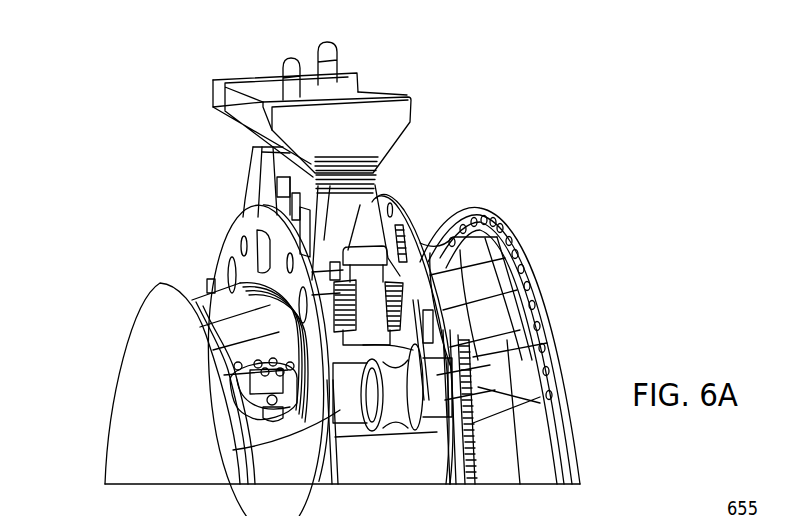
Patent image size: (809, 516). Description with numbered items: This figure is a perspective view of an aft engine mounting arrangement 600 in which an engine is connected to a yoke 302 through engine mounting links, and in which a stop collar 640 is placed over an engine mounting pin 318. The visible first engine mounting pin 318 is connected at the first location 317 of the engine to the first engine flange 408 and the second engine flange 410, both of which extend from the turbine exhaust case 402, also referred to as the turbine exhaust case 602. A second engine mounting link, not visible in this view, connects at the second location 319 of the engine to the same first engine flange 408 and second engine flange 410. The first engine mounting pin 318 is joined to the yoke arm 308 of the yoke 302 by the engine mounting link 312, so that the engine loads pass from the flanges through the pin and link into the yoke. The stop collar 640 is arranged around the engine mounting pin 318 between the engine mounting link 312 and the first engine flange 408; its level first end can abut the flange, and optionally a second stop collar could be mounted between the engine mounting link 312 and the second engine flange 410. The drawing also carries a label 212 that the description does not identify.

The aft engine mounting arrangement 600 is at (170, 101).
The yoke 302 is at (416, 91).
The housing 212 is at (503, 130).
The yoke arm 308 is at (358, 205).
The first engine flange 408 is at (407, 223).
The second engine flange 410 is at (257, 214).
The second location 319 is at (196, 270).
The turbine exhaust case 602 is at (548, 265).
The stop collar 640 is at (528, 353).
The first location 317 is at (484, 381).
The engine mounting pin 318 is at (305, 437).
The engine mounting link 312 is at (393, 427).
The turbine exhaust case 402 is at (398, 470).